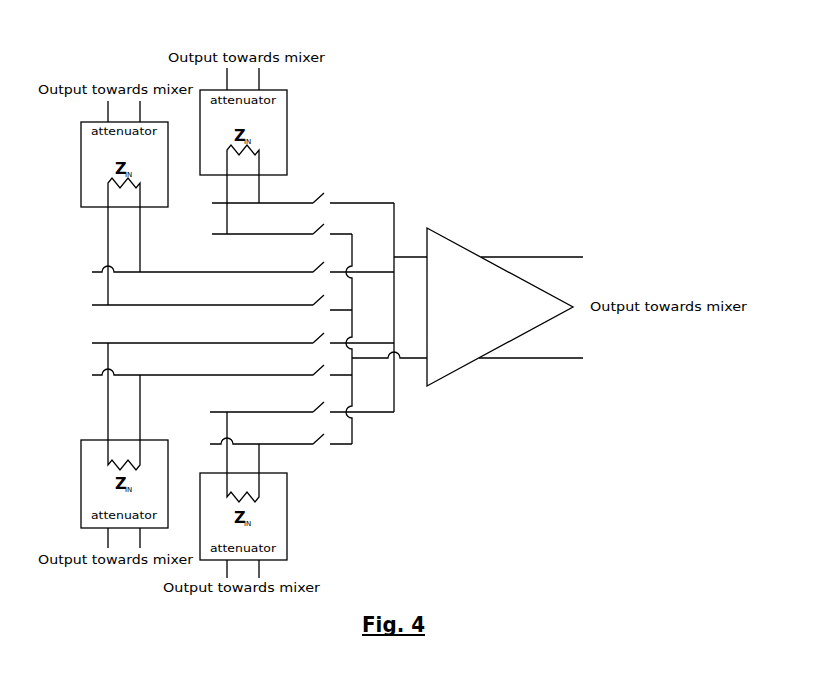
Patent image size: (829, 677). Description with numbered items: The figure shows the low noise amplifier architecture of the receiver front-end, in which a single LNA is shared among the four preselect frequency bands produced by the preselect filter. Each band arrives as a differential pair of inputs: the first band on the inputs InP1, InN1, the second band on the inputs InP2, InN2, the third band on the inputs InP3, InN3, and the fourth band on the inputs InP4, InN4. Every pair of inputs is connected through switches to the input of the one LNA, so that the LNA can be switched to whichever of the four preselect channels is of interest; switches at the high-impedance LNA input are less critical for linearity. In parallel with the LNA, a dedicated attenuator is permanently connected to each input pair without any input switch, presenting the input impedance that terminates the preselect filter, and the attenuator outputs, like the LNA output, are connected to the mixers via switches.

The first positive input InP1 is at (286, 202).
The first negative input InN1 is at (265, 233).
The second positive input InP2 is at (224, 270).
The second negative input InN2 is at (203, 303).
The third positive input InP3 is at (224, 341).
The third negative input InN3 is at (203, 373).
The fourth positive input InP4 is at (283, 410).
The fourth negative input InN4 is at (262, 442).